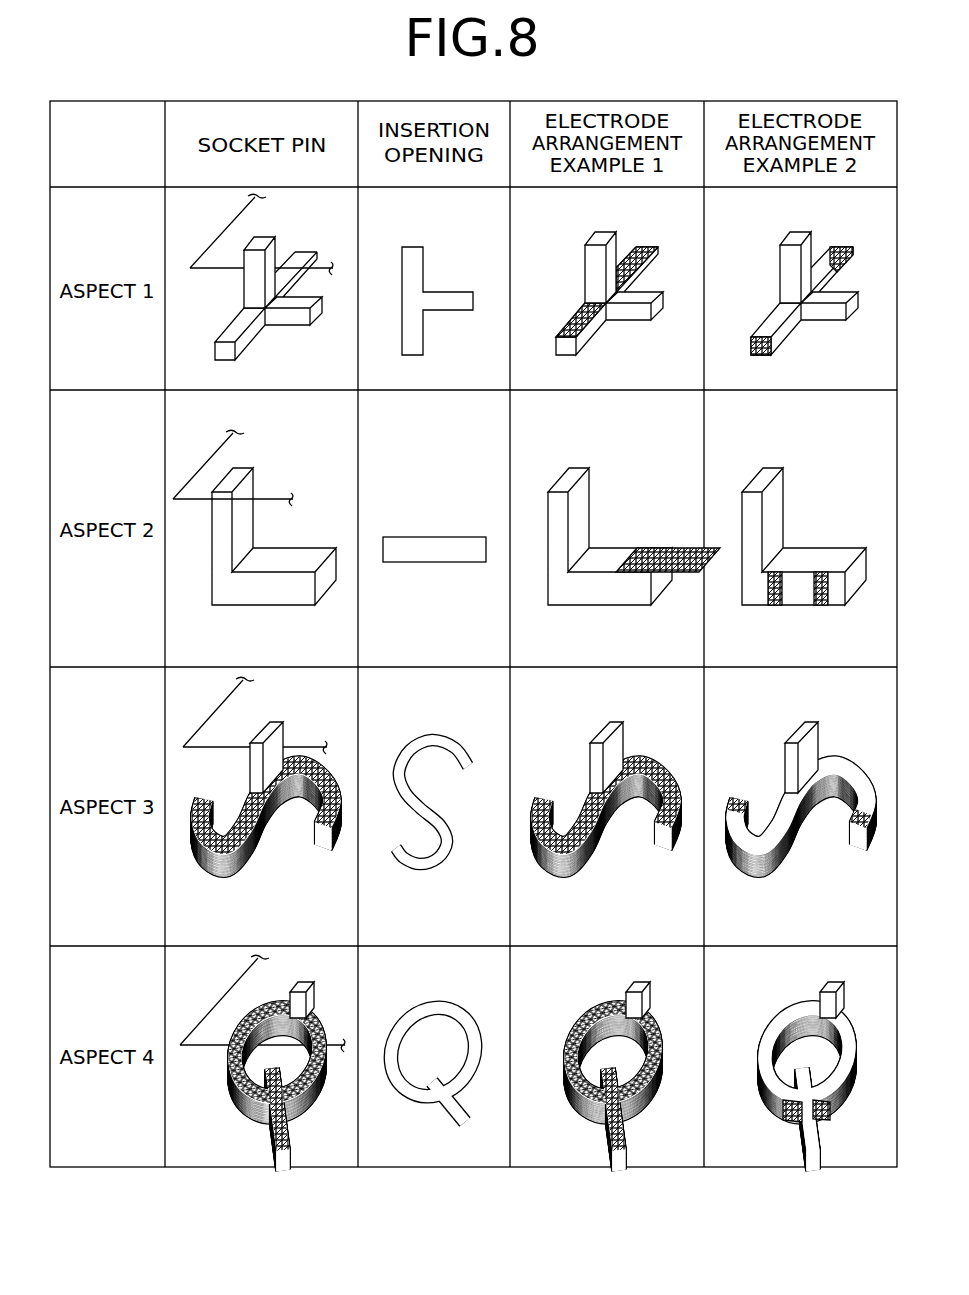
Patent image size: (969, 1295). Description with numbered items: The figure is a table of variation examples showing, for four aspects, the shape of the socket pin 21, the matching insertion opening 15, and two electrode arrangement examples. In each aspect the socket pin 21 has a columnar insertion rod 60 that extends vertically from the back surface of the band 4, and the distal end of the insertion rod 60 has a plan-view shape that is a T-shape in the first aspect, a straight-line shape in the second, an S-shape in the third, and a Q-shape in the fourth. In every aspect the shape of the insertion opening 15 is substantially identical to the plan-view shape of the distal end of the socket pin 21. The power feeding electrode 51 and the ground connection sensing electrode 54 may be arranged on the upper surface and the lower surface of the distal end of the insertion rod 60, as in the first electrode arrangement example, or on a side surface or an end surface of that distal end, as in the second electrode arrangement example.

The band 4 is at (224, 236).
The insertion opening 15 is at (430, 268).
The socket pin 21 is at (288, 350).
The power feeding electrode 51 is at (634, 250).
The ground connection sensing electrode 54 is at (618, 322).
The insertion rod 60 is at (246, 287).